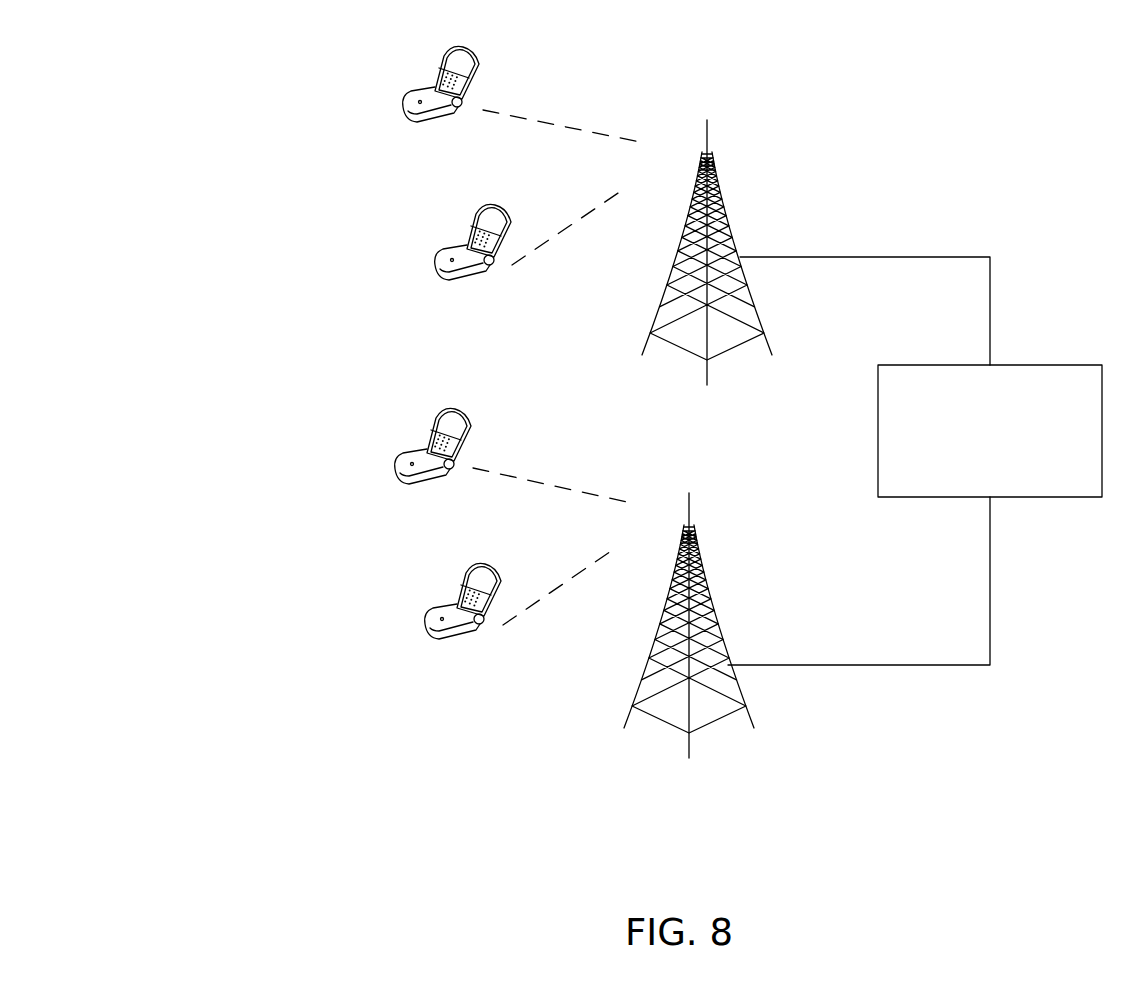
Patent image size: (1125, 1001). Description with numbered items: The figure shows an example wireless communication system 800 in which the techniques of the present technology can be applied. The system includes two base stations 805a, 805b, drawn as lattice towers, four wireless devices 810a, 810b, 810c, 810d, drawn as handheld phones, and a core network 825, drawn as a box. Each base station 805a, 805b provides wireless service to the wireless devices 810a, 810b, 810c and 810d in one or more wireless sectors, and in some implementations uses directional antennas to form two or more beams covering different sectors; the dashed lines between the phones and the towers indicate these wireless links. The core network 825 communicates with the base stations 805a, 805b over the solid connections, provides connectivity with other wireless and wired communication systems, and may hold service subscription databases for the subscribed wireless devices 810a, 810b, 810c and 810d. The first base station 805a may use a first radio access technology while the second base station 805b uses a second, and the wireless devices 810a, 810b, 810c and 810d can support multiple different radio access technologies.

The wireless communication system 800 is at (280, 177).
The first base station 805a is at (729, 259).
The second base station 805b is at (711, 637).
The wireless device 810a is at (524, 83).
The wireless device 810b is at (531, 220).
The wireless device 810c is at (511, 439).
The wireless device 810d is at (521, 585).
The core network 825 is at (915, 461).